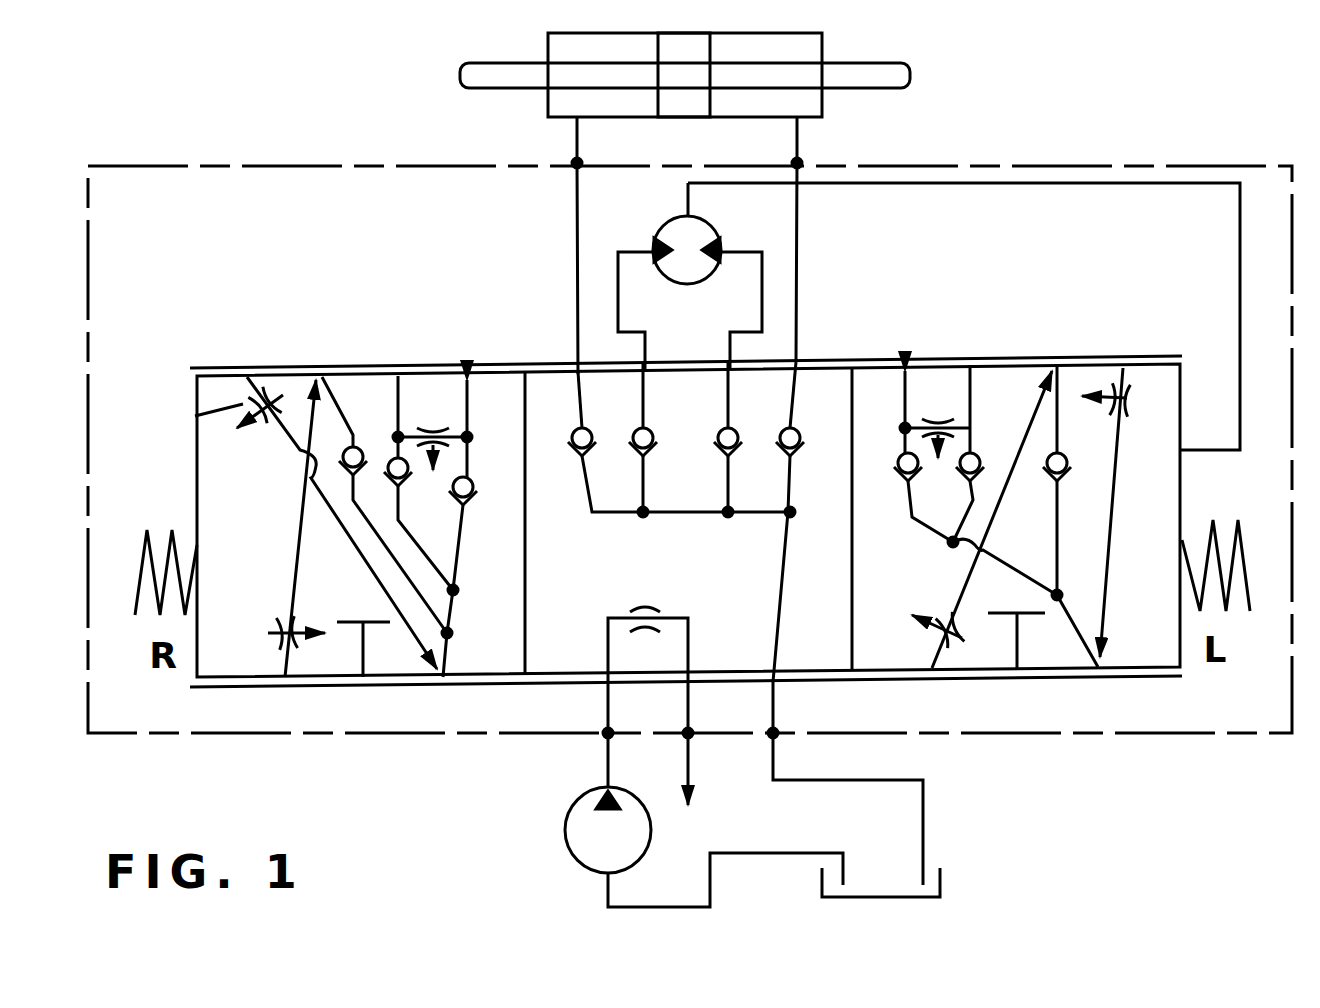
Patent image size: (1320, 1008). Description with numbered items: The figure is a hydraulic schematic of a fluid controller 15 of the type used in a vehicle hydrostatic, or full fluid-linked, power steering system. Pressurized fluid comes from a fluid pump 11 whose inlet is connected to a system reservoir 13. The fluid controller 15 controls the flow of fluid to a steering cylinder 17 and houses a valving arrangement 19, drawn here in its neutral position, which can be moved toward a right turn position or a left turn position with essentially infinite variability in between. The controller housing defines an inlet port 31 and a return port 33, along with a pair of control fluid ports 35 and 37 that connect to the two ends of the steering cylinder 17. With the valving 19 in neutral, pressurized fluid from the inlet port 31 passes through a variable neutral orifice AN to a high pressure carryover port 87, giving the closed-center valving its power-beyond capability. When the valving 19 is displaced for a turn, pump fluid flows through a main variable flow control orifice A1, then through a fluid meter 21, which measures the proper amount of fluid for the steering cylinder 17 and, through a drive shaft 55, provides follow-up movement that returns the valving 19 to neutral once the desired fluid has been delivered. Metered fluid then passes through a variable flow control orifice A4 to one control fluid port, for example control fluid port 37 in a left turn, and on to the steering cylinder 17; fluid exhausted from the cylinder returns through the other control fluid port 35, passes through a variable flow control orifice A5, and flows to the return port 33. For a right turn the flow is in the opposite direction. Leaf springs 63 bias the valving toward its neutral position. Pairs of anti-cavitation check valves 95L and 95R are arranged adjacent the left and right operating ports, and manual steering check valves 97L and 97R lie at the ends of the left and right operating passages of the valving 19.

The fluid pump 11 is at (568, 840).
The system reservoir 13 is at (943, 883).
The fluid controller 15 is at (236, 160).
The steering cylinder 17 is at (824, 100).
The valving arrangement 19 is at (290, 318).
The fluid meter 21 is at (662, 230).
The inlet port 31 is at (605, 735).
The return port 33 is at (778, 738).
The control fluid port 35 is at (797, 163).
The control fluid port 37 is at (577, 163).
The drive shaft 55 is at (1060, 183).
The leaf springs 63 is at (185, 528).
The high pressure carryover port 87 is at (690, 738).
The anti-cavitation check valves 95L is at (570, 450).
The anti-cavitation check valves 95R is at (472, 492).
The manual steering check valve 97L is at (363, 445).
The manual steering check valve 97R is at (390, 480).
The main variable flow control orifice A1 is at (280, 616).
The variable flow control orifice A4 is at (432, 400).
The variable flow control orifice A5 is at (195, 416).
The variable neutral orifice AN is at (653, 600).